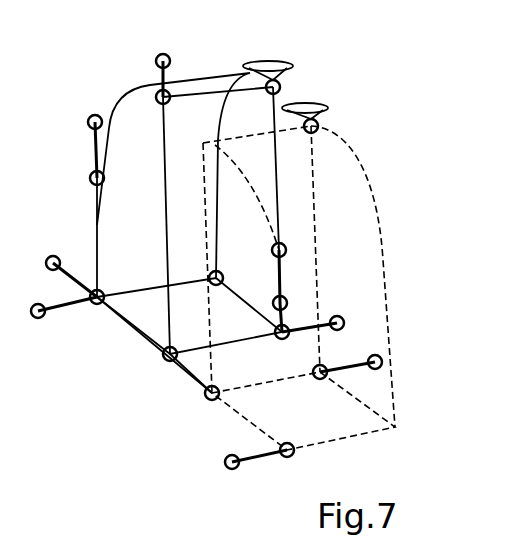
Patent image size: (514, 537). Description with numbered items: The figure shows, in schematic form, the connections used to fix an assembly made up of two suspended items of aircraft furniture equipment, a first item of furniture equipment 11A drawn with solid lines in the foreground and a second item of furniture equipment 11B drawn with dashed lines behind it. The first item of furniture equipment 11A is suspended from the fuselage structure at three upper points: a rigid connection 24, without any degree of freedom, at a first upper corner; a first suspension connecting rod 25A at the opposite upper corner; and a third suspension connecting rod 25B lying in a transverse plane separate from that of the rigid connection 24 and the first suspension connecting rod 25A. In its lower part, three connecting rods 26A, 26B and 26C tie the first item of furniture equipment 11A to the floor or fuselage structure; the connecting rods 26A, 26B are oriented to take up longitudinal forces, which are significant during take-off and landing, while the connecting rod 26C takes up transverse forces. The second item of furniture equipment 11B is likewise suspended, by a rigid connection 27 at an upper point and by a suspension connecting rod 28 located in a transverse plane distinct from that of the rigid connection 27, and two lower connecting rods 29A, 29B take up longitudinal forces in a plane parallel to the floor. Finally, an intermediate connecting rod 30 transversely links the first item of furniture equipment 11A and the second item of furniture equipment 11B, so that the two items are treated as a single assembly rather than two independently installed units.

The first item of furniture equipment 11A is at (137, 118).
The second item of furniture equipment 11B is at (367, 250).
The rigid connection 24 is at (280, 60).
The rigid connection 27 is at (317, 105).
The suspension connecting rod 28 is at (282, 270).
The first suspension connecting rod 25A is at (173, 73).
The third suspension connecting rod 25B is at (93, 143).
The connecting rod 26A is at (67, 307).
The connecting rod 26B is at (303, 318).
The connecting rod 26C is at (72, 272).
The connecting rod 29A is at (263, 456).
The connecting rod 29B is at (353, 370).
The intermediate connecting rod 30 is at (187, 373).